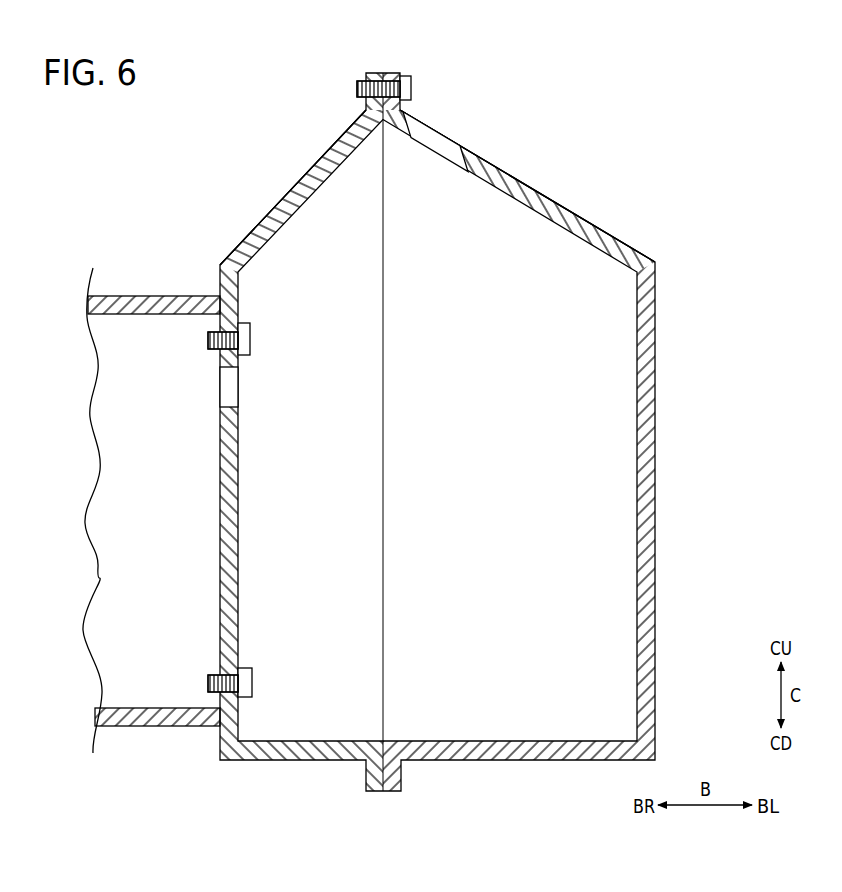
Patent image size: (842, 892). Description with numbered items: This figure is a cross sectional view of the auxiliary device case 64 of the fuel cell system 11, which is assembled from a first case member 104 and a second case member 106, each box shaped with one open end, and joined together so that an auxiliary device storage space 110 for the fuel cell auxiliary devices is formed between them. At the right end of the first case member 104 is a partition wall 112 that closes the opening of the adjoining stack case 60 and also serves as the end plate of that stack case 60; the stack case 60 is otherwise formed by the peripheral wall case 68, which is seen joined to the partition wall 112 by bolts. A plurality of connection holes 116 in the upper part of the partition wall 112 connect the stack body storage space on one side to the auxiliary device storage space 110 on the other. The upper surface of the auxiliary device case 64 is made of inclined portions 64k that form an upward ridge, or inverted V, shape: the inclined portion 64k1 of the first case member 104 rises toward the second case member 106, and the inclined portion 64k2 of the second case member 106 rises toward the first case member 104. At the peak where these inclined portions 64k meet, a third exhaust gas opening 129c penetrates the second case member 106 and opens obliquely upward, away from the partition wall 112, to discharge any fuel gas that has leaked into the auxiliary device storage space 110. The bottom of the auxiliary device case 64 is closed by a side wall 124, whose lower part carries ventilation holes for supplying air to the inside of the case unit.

The battery pack 11 is at (124, 131).
The stack case 60 is at (127, 293).
The peripheral wall case 68 is at (187, 296).
The auxiliary device case 64 is at (638, 231).
The inclined portion 64k is at (437, 187).
The inclined portion of the first case member 64k1 is at (268, 223).
The inclined portion of the second case member 64k2 is at (520, 178).
The first case member 104 is at (291, 169).
The second case member 106 is at (597, 222).
The auxiliary device storage space 110 is at (598, 512).
The partition wall 112 is at (230, 523).
The connection hole 116 is at (230, 390).
The side wall 124 is at (500, 760).
The third exhaust gas opening 129c is at (438, 137).